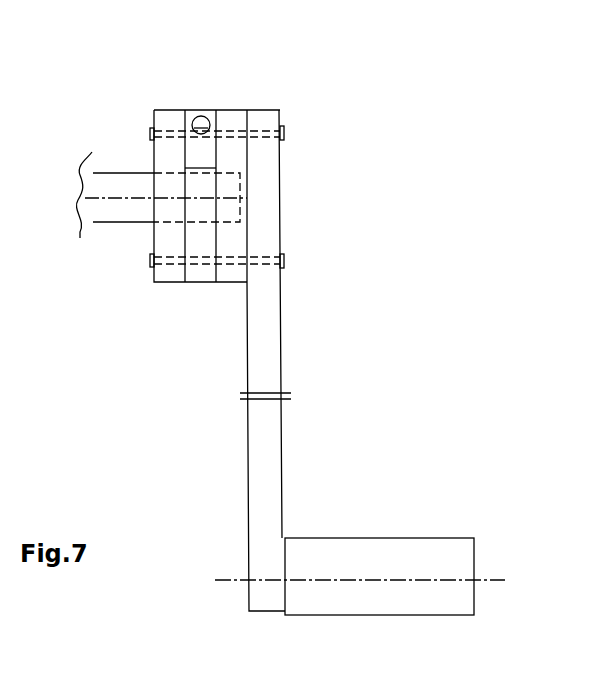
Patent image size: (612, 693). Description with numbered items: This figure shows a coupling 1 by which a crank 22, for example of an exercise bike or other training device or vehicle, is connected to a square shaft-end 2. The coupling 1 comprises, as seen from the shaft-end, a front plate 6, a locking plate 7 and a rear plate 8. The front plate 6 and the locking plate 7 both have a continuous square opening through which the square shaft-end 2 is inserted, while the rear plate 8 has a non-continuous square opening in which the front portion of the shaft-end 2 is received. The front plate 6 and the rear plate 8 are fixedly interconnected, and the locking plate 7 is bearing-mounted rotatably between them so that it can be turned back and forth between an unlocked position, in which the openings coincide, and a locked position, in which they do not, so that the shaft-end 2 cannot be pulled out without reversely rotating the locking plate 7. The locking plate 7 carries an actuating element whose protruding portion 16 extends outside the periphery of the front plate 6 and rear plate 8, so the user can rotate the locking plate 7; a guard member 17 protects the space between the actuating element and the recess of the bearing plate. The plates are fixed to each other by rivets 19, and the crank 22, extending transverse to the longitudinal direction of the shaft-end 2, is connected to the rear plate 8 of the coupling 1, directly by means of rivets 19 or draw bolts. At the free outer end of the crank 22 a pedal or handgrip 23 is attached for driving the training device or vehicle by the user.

The coupling 1 is at (200, 60).
The shaft-end 2 is at (117, 182).
The front plate 6 is at (170, 275).
The locking plate 7 is at (200, 275).
The rear plate 8 is at (233, 275).
The protruding portion 16 is at (204, 117).
The guard member 17 is at (197, 142).
The rivets 19 is at (283, 128).
The crank 22 is at (273, 432).
The pedal or handgrip 23 is at (335, 553).